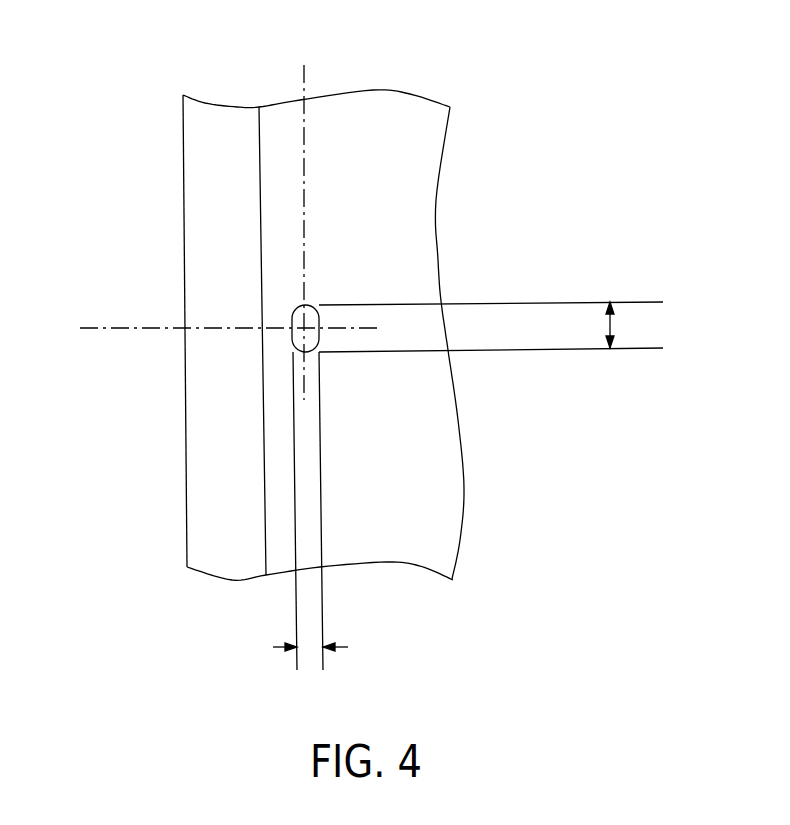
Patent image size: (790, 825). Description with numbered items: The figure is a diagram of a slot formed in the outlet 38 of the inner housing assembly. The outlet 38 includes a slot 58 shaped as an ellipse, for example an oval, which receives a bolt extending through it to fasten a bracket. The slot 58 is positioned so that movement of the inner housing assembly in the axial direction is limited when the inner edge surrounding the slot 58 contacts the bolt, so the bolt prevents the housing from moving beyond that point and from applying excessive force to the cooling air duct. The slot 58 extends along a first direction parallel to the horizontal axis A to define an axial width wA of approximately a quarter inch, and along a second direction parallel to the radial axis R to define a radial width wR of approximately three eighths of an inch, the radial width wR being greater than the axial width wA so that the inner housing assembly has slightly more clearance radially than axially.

The outlet 38 is at (176, 159).
The slot 58 is at (292, 312).
The radial axis R is at (301, 217).
The horizontal axis A is at (216, 330).
The radial width wR is at (614, 321).
The axial width wA is at (303, 650).